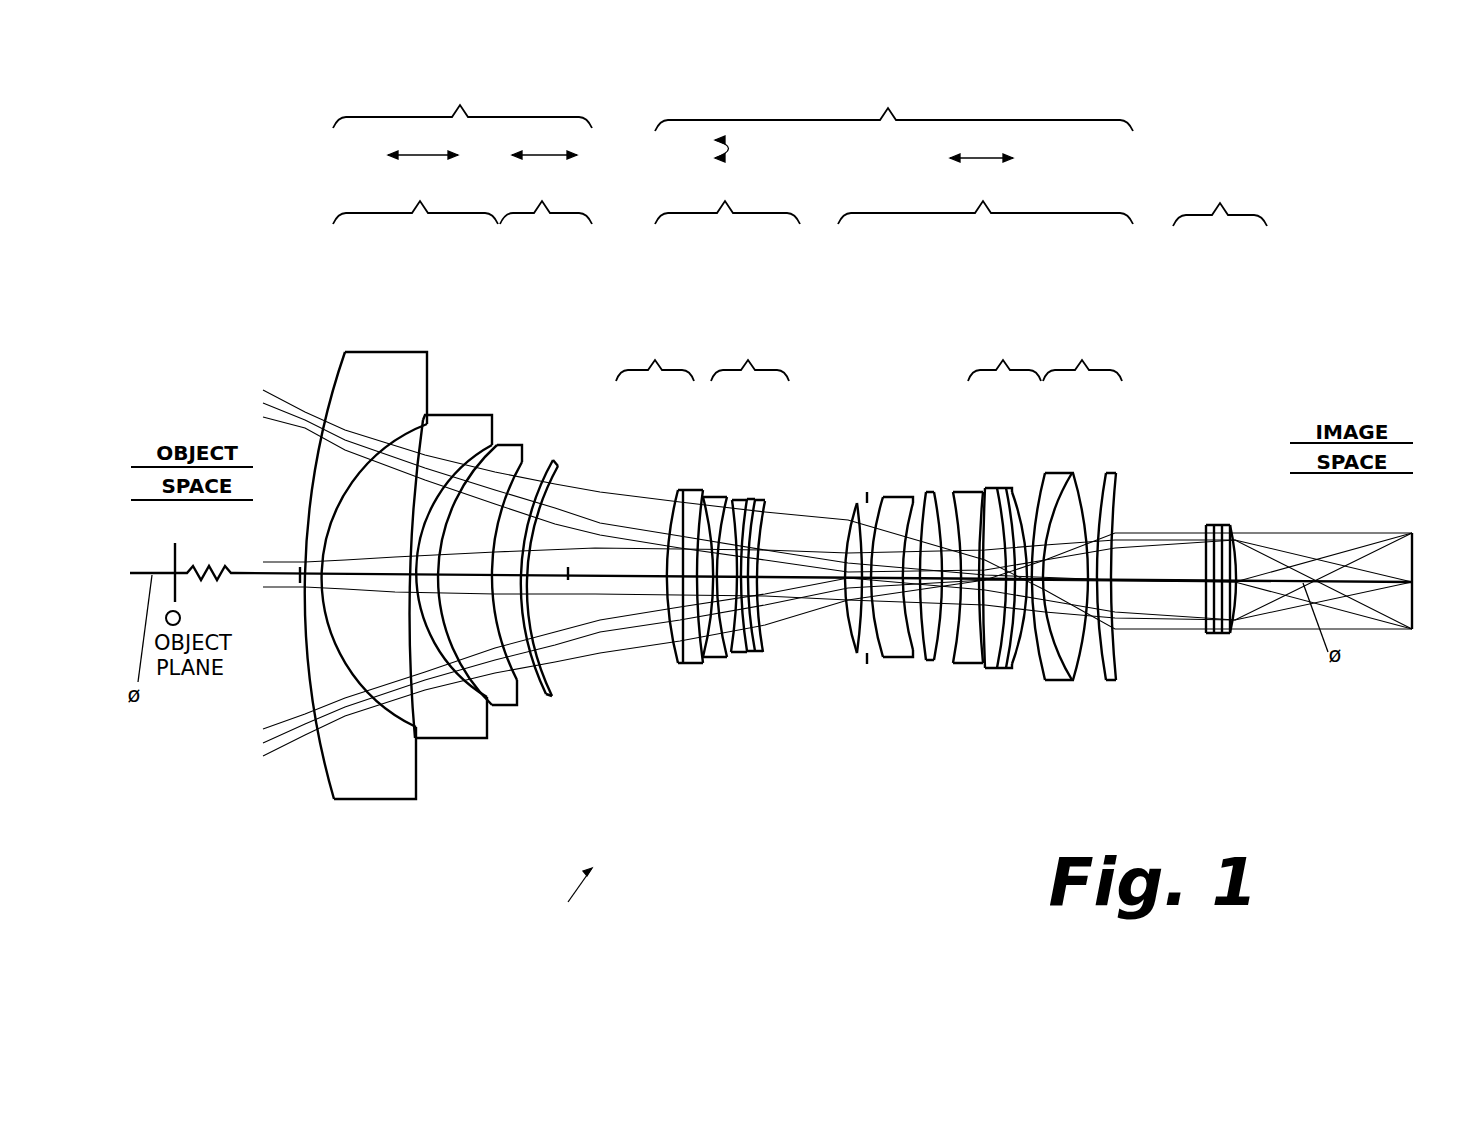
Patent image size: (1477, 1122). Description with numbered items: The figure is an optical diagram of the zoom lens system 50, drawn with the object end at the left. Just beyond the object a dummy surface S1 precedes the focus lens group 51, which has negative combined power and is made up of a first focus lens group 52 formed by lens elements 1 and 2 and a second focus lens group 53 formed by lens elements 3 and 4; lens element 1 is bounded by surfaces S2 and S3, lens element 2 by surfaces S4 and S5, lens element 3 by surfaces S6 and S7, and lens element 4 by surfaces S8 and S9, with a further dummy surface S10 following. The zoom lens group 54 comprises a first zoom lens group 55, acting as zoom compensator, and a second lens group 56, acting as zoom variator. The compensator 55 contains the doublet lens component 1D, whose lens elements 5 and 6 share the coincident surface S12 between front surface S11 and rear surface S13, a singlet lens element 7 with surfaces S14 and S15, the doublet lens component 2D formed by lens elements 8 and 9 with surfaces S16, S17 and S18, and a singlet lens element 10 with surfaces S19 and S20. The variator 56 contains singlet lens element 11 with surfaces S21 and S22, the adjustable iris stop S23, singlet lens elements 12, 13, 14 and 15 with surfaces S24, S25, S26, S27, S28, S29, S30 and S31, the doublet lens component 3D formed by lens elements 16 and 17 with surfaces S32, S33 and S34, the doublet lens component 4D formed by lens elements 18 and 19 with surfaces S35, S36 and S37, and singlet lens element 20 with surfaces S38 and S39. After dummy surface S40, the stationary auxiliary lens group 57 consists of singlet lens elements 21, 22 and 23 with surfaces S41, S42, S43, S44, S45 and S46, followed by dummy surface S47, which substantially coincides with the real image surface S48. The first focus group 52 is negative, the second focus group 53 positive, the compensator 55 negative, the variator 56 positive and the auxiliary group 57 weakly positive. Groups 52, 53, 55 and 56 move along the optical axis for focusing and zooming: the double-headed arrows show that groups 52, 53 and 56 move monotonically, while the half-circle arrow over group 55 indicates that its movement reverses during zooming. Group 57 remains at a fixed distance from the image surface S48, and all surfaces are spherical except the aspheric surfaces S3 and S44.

The lens element 1 is at (338, 549).
The lens element 2 is at (421, 540).
The lens element 3 is at (484, 542).
The lens element 4 is at (551, 571).
The lens element 5 is at (646, 582).
The lens element 6 is at (682, 590).
The singlet lens element 7 is at (722, 592).
The lens element 8 is at (777, 576).
The lens element 9 is at (789, 549).
The singlet lens element 10 is at (791, 571).
The singlet lens element 11 is at (833, 604).
The singlet lens element 12 is at (888, 590).
The singlet lens element 13 is at (916, 589).
The singlet lens element 14 is at (998, 534).
The singlet lens element 15 is at (962, 605).
The lens element 16 is at (982, 601).
The lens element 17 is at (1009, 597).
The lens element 18 is at (1037, 587).
The lens element 19 is at (1080, 583).
The singlet lens element 20 is at (1130, 593).
The singlet lens element 21 is at (1172, 580).
The singlet lens element 22 is at (1204, 585).
The singlet lens element 23 is at (1261, 605).
The zoom lens system 50 is at (571, 896).
The focus lens group 51 is at (462, 117).
The first focus lens group 52 is at (415, 219).
The second focus lens group 53 is at (548, 225).
The zoom lens group 54 is at (894, 121).
The first zoom lens group 55 is at (727, 223).
The second lens group 56 is at (985, 224).
The auxiliary lens group 57 is at (1220, 229).
The first doublet lens component 1D is at (655, 353).
The second doublet lens component 2D is at (750, 353).
The first doublet lens component 3D is at (1004, 355).
The second doublet lens component 4D is at (1082, 355).
The dummy optical surface S1 is at (299, 578).
The lens surface S2 is at (307, 662).
The lens surface S3 is at (330, 619).
The lens surface S4 is at (402, 628).
The lens surface S5 is at (473, 692).
The lens surface S6 is at (447, 622).
The lens surface S7 is at (496, 628).
The lens surface S8 is at (545, 697).
The lens surface S9 is at (546, 657).
The dummy optical surface S10 is at (572, 576).
The front lens surface S11 is at (671, 659).
The coincident lens surface S12 is at (678, 666).
The rear lens surface S13 is at (702, 665).
The lens surface S14 is at (705, 660).
The lens surface S15 is at (727, 660).
The lens surface S16 is at (743, 659).
The coincident lens surface S17 is at (741, 658).
The lens surface S18 is at (757, 628).
The lens surface S19 is at (758, 652).
The lens surface S20 is at (754, 602).
The lens surface S21 is at (849, 657).
The lens surface S22 is at (858, 656).
The adjustable optical stop S23 is at (867, 664).
The lens surface S24 is at (848, 547).
The lens surface S25 is at (894, 664).
The lens surface S26 is at (903, 662).
The lens surface S27 is at (902, 658).
The lens surface S28 is at (1027, 567).
The lens surface S29 is at (1022, 598).
The lens surface S30 is at (953, 665).
The lens surface S31 is at (975, 671).
The lens surface S32 is at (980, 670).
The coincident lens surface S33 is at (1006, 671).
The lens surface S34 is at (1036, 682).
The lens surface S35 is at (1050, 683).
The coincident lens surface S36 is at (1074, 683).
The lens surface S37 is at (1102, 683).
The lens surface S38 is at (1117, 683).
The lens surface S39 is at (1118, 645).
The dummy optical surface S40 is at (1206, 572).
The lens surface S41 is at (1207, 608).
The lens surface S42 is at (1216, 637).
The lens surface S43 is at (1221, 637).
The lens surface S44 is at (1228, 637).
The lens surface S45 is at (1229, 593).
The lens surface S46 is at (1233, 598).
The dummy optical surface S47 is at (1410, 584).
The real image surface S48 is at (1413, 608).